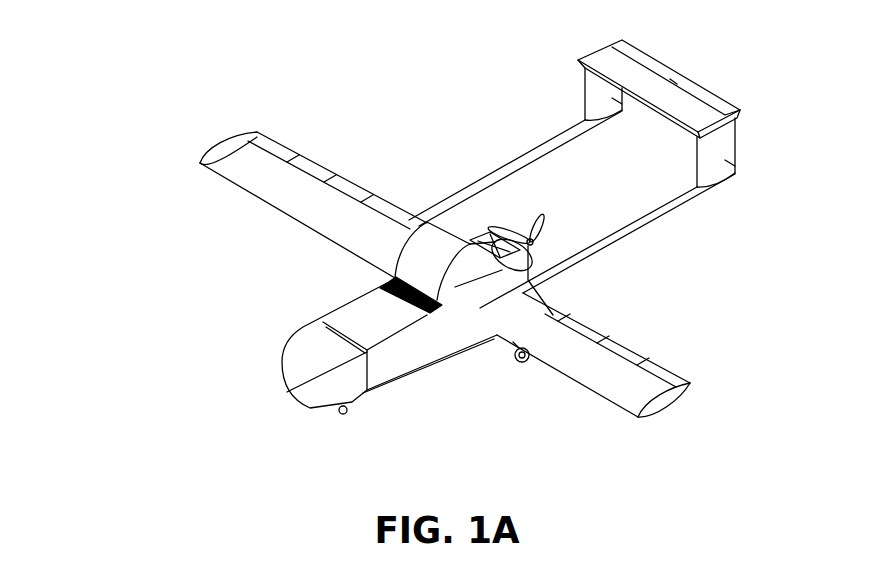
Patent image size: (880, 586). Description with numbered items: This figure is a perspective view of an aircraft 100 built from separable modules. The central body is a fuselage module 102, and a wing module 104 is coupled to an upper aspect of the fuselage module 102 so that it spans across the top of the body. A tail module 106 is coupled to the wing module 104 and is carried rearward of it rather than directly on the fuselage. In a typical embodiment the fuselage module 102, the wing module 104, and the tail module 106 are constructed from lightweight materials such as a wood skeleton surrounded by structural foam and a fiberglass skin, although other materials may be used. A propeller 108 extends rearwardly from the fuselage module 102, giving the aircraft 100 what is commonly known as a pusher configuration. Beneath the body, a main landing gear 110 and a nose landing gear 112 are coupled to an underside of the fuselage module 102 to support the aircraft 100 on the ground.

The aircraft 100 is at (162, 55).
The fuselage module 102 is at (408, 377).
The wing module 104 is at (238, 132).
The tail module 106 is at (653, 57).
The propeller 108 is at (550, 213).
The main landing gear 110 is at (518, 362).
The nose landing gear 112 is at (344, 416).